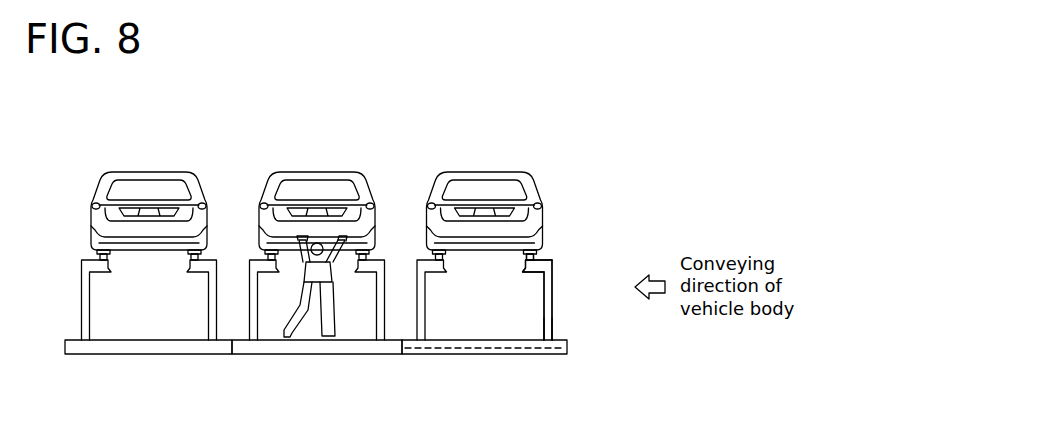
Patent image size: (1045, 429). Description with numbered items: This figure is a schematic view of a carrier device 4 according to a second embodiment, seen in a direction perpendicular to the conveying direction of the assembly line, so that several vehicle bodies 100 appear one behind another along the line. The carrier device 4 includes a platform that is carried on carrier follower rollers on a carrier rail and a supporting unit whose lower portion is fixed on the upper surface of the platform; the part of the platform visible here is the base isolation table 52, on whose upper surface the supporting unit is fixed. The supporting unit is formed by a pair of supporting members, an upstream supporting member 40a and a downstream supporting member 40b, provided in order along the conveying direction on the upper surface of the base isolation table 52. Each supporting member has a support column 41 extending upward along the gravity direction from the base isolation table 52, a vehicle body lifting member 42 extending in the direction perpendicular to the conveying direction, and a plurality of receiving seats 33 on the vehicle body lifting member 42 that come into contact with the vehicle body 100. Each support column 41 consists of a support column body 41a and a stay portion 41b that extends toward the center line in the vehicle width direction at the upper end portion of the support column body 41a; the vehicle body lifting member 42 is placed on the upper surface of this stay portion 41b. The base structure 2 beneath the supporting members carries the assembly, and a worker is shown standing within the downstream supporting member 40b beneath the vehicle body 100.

The vehicle body 100 is at (317, 172).
The carrier device 4 is at (560, 190).
The upstream supporting member 40a is at (577, 240).
The downstream supporting member 40b is at (405, 240).
The support column 41 is at (552, 302).
The support column body 41a is at (552, 328).
The stay portion 41b is at (548, 260).
The vehicle body lifting member 42 is at (537, 258).
The receiving seat 33 is at (522, 256).
The conveyor pallet 2 is at (303, 357).
The base isolation table 52 is at (429, 350).